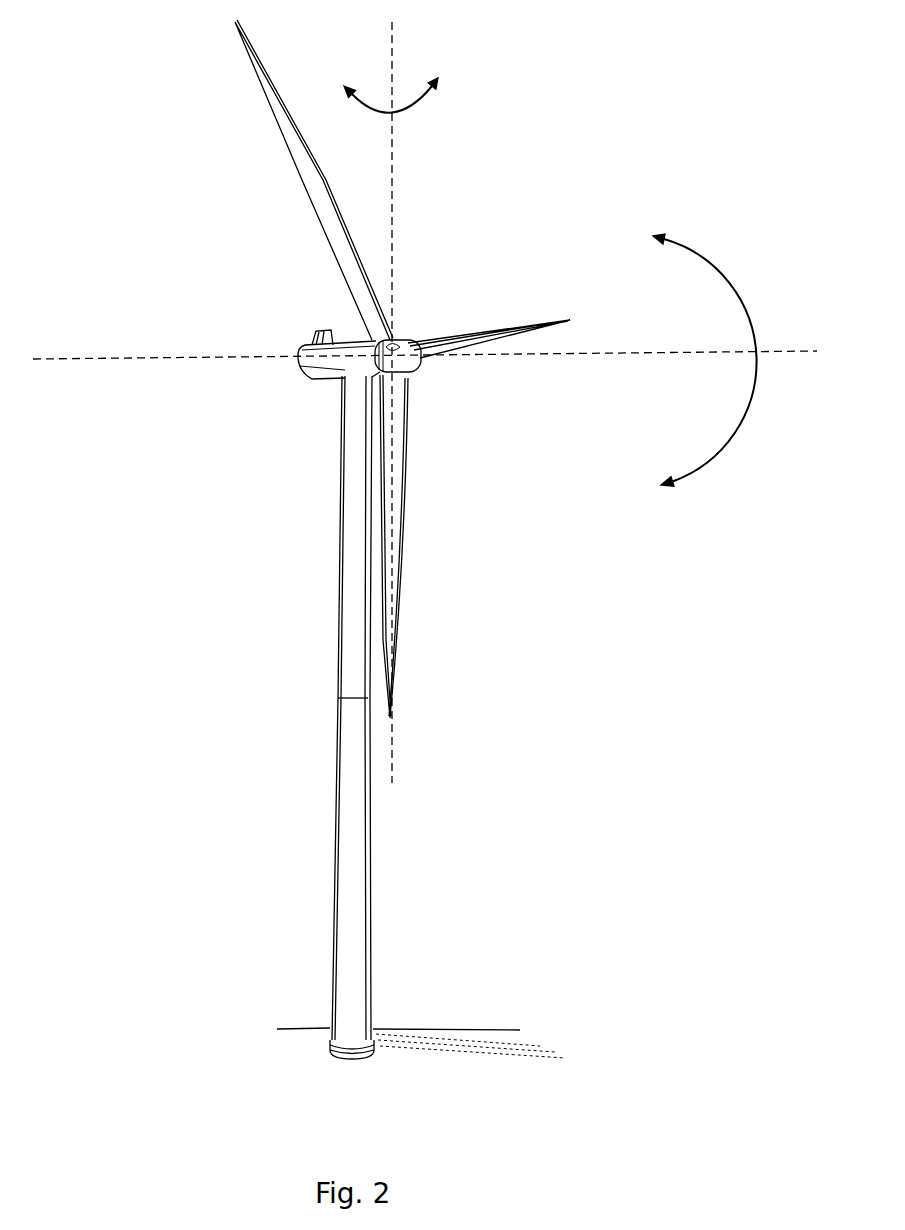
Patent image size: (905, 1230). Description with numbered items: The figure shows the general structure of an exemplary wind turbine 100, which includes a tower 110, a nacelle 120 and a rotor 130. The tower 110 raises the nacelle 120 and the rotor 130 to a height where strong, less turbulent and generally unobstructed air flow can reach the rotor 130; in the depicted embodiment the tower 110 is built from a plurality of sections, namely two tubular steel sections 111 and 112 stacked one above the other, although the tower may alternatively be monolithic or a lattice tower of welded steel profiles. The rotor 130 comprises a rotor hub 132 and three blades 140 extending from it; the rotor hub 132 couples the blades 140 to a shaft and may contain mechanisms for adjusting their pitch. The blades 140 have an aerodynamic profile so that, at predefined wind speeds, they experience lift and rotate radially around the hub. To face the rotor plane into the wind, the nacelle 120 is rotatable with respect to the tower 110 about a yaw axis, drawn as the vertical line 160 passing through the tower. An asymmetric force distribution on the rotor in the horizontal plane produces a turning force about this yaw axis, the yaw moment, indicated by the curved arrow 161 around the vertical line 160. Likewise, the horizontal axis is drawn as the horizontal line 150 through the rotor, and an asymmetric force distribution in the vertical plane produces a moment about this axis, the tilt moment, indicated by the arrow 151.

The wind turbine 100 is at (510, 226).
The tower 110 is at (418, 717).
The tubular steel section 111 is at (340, 863).
The tubular steel section 112 is at (343, 522).
The nacelle 120 is at (285, 363).
The rotor 130 is at (407, 368).
The rotor hub 132 is at (394, 343).
The blade 140 is at (268, 98).
The horizontal line 150 is at (807, 350).
The arrow 151 is at (710, 257).
The vertical line 160 is at (392, 50).
The arrow 161 is at (433, 92).